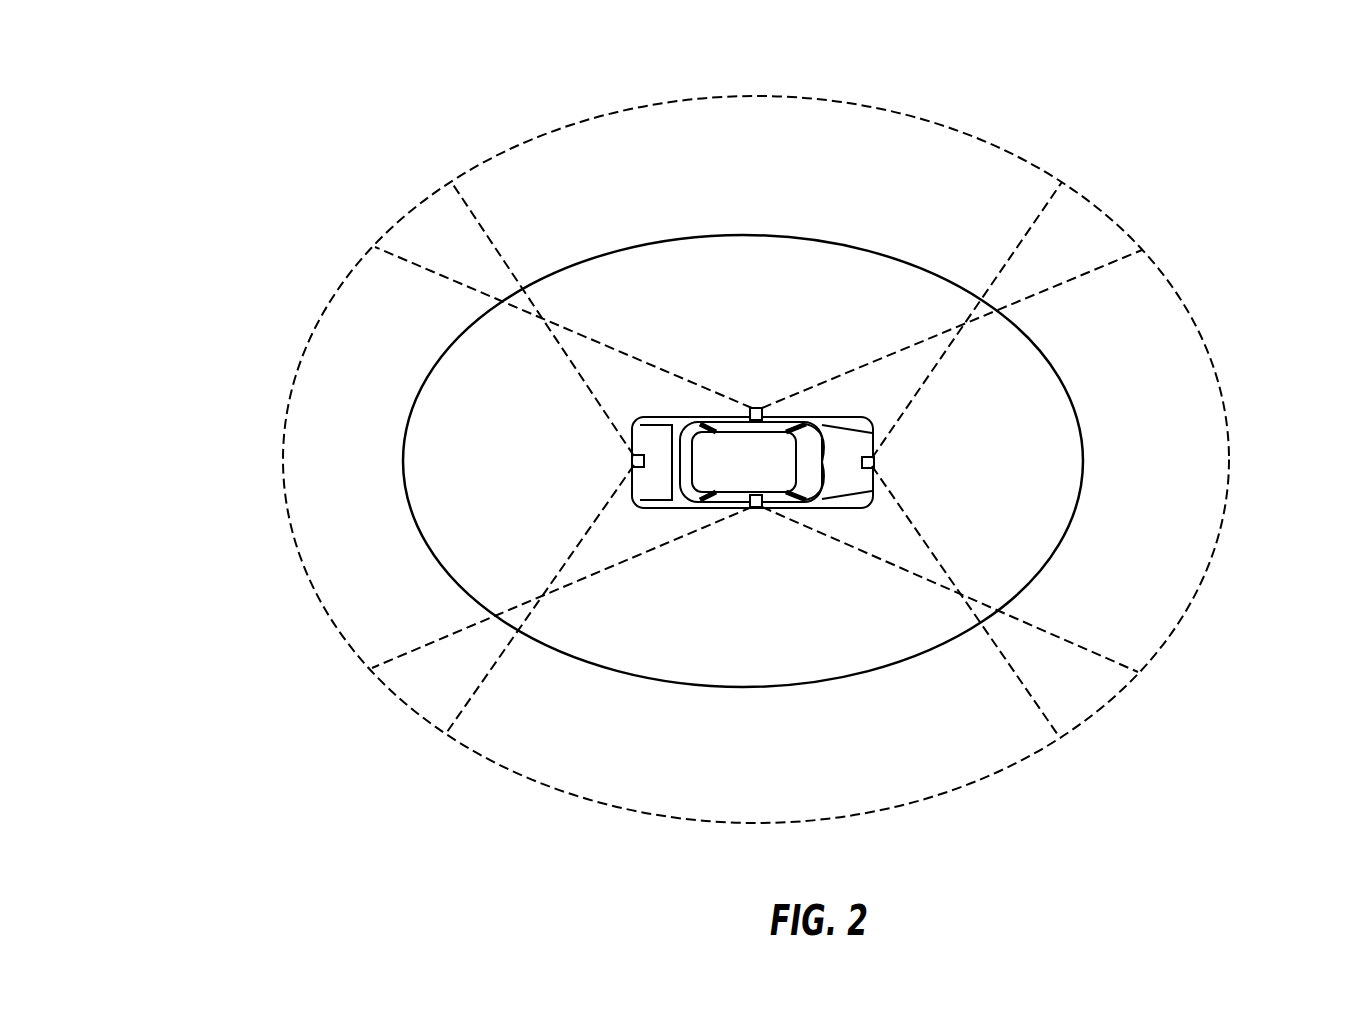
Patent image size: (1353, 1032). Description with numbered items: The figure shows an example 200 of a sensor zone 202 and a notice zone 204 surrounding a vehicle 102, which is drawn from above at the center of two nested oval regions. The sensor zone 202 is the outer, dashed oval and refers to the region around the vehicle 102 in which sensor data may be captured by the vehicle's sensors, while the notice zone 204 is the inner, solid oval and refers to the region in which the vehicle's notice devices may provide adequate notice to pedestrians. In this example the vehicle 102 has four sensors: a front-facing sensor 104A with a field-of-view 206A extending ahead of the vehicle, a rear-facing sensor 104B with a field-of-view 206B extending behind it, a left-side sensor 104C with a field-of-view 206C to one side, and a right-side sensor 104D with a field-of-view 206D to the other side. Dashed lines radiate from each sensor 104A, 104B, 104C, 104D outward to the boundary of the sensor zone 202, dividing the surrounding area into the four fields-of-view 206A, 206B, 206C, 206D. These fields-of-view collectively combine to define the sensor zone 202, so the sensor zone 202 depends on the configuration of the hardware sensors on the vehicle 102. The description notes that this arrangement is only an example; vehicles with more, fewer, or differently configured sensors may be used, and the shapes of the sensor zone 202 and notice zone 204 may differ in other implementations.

The example 200 is at (283, 44).
The sensor zone 202 is at (1013, 155).
The notice zone 204 is at (580, 260).
The vehicle 102 is at (752, 462).
The front-facing sensor 104A is at (876, 463).
The rear-facing sensor 104B is at (630, 460).
The left-side sensor 104C is at (757, 406).
The right-side sensor 104D is at (753, 511).
The field-of-view 206A is at (1142, 455).
The field-of-view 206B is at (344, 460).
The field-of-view 206C is at (740, 165).
The field-of-view 206D is at (740, 759).